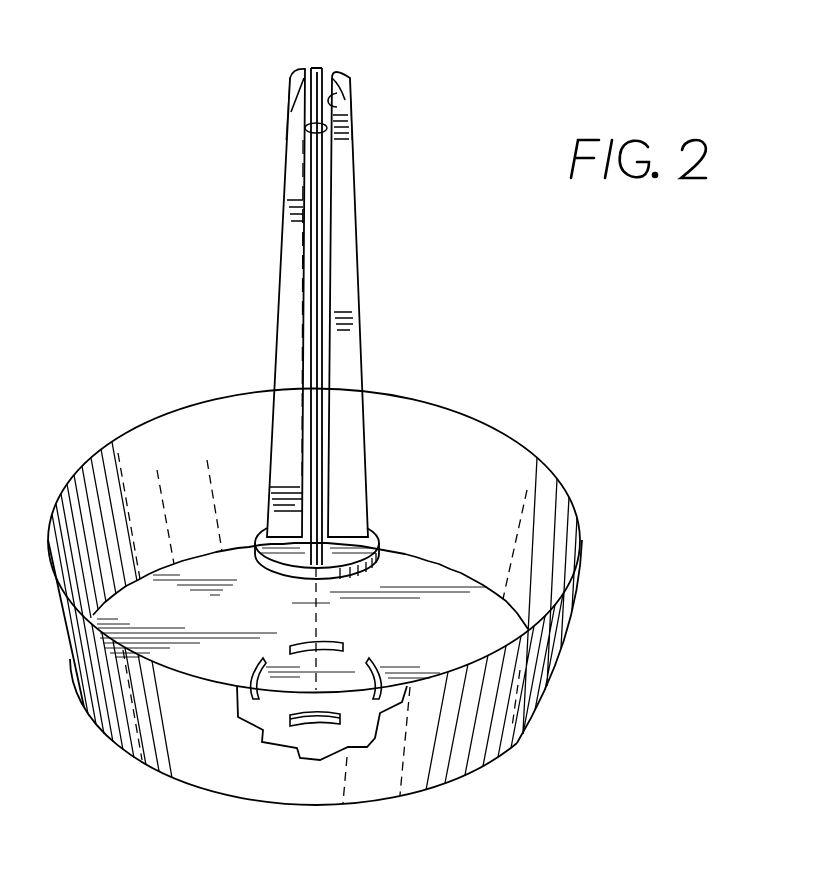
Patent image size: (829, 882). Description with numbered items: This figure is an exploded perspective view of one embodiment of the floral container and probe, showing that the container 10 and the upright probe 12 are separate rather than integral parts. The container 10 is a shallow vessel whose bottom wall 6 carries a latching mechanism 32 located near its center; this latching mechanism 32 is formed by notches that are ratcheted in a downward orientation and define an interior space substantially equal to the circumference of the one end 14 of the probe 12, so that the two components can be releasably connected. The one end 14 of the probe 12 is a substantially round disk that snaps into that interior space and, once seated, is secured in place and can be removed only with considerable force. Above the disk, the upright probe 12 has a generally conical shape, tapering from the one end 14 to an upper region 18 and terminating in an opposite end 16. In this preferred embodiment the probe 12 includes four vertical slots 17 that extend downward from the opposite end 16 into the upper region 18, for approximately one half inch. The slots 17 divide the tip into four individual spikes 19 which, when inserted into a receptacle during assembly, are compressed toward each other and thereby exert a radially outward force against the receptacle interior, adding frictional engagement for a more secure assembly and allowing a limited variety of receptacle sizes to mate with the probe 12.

The bottom wall 6 is at (463, 577).
The container 10 is at (483, 447).
The upright probe 12 is at (345, 225).
The one end 14 is at (260, 543).
The opposite end 16 is at (318, 67).
The vertical slots 17 is at (338, 106).
The upper region 18 is at (282, 65).
The spikes 19 is at (300, 72).
The latching mechanism 32 is at (310, 725).